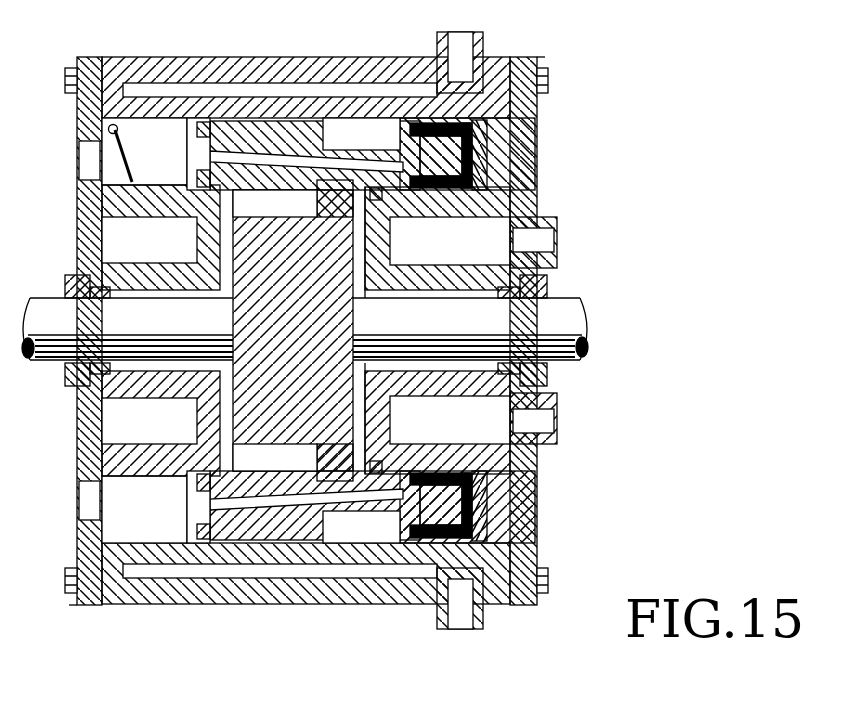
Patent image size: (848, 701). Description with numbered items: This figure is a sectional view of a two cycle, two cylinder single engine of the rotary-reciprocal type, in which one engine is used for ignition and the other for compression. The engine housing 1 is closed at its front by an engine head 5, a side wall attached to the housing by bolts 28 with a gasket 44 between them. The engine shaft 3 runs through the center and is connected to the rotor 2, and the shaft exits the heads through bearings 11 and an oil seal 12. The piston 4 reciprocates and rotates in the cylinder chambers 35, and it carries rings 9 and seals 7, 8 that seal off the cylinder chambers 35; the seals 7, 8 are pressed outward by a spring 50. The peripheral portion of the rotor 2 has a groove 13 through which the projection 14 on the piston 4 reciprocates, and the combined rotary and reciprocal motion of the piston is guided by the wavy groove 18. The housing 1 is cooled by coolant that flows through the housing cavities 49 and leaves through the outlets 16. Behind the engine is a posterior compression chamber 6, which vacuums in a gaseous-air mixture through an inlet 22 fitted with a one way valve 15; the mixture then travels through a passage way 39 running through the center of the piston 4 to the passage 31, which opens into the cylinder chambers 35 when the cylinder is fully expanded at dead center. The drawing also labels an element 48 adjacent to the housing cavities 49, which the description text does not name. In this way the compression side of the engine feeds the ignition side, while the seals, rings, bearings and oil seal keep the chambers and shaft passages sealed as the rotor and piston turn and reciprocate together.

The engine housing 1 is at (190, 88).
The rotor 2 is at (250, 400).
The engine shaft 3 is at (70, 313).
The piston 4 is at (253, 123).
The engine head 5 is at (547, 72).
The posterior compression chamber 6 is at (66, 82).
The seal 7 is at (445, 128).
The seal 8 is at (507, 118).
The rings 9 is at (150, 110).
The bearings 11 is at (68, 367).
The oil seal 12 is at (77, 385).
The groove 13 is at (160, 190).
The projection 14 is at (475, 177).
The one way valve 15 is at (110, 127).
The outlets 16 is at (483, 45).
The wavy groove 18 is at (350, 140).
The inlet 22 is at (93, 168).
The bolts 28 is at (70, 592).
The passage 31 is at (558, 232).
The cylinder chambers 35 is at (535, 56).
The passage way 39 is at (72, 570).
The gasket 44 is at (100, 68).
The stator 48 is at (133, 200).
The housing cavities 49 is at (455, 80).
The spring 50 is at (480, 157).